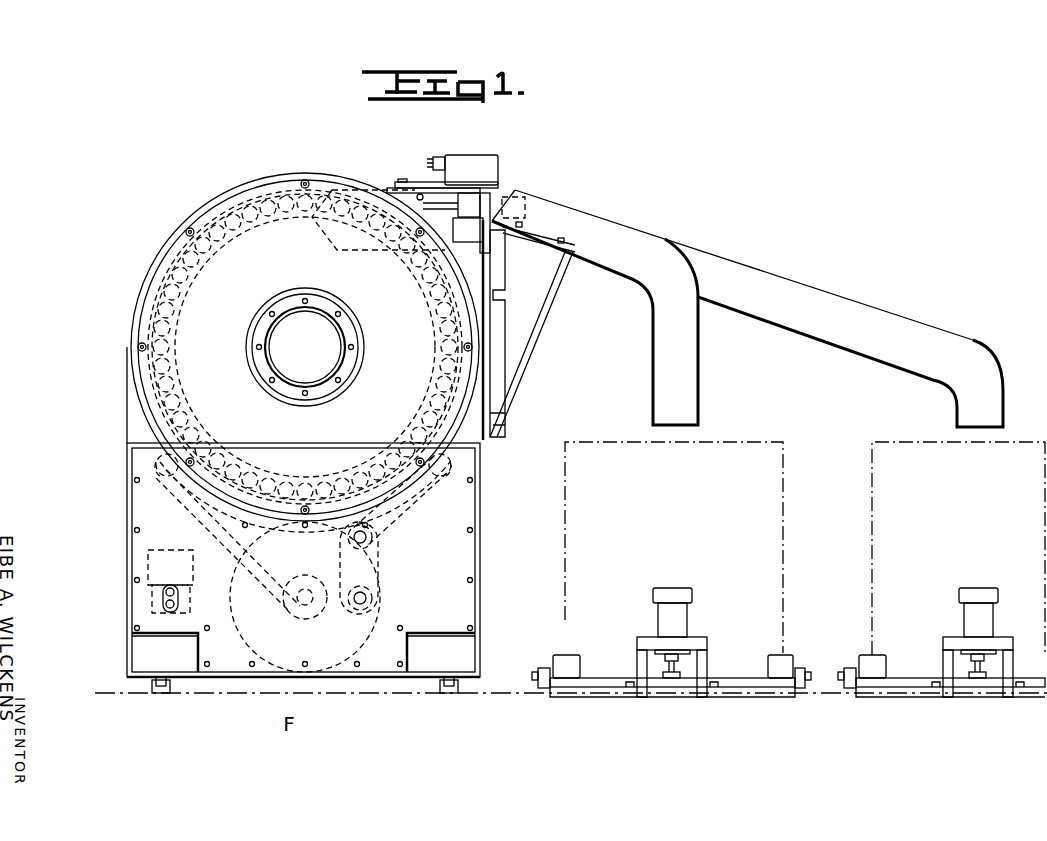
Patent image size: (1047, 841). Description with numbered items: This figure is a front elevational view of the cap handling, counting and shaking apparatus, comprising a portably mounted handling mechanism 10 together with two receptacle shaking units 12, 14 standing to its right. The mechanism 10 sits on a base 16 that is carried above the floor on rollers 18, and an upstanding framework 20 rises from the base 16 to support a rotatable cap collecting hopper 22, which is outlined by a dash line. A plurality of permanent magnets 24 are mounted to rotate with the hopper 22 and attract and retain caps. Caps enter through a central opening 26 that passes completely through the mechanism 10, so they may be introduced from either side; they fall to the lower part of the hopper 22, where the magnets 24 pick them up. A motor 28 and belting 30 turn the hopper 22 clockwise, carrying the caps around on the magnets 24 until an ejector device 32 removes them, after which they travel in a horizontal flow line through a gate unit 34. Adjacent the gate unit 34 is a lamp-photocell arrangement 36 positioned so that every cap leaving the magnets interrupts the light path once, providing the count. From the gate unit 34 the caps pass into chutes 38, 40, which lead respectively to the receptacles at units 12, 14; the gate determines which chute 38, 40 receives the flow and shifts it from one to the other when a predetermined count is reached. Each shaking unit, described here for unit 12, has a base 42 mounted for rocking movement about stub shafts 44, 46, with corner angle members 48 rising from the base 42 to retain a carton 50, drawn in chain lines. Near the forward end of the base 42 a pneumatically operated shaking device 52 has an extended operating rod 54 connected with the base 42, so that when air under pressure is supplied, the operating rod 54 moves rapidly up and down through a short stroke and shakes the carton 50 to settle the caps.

The handling mechanism 10 is at (118, 310).
The receptacle shaking unit 12 is at (752, 422).
The receptacle shaking unit 14 is at (910, 428).
The base 16 is at (247, 677).
The rollers 18 is at (148, 686).
The upstanding framework 20 is at (127, 462).
The cap collecting hopper 22 is at (169, 256).
The permanent magnets 24 is at (256, 205).
The central opening 26 is at (283, 332).
The motor 28 is at (373, 617).
The belting 30 is at (202, 528).
The ejector device 32 is at (312, 218).
The gate unit 34 is at (518, 151).
The lamp-photocell arrangement 36 is at (498, 197).
The chute 38 is at (693, 333).
The chute 40 is at (960, 346).
The base 42 is at (752, 693).
The stub shaft 44 is at (810, 682).
The stub shaft 46 is at (538, 670).
The corner angle members 48 is at (563, 653).
The carton 50 is at (785, 545).
The pneumatically operated shaking device 52 is at (688, 616).
The operating rod 54 is at (668, 660).